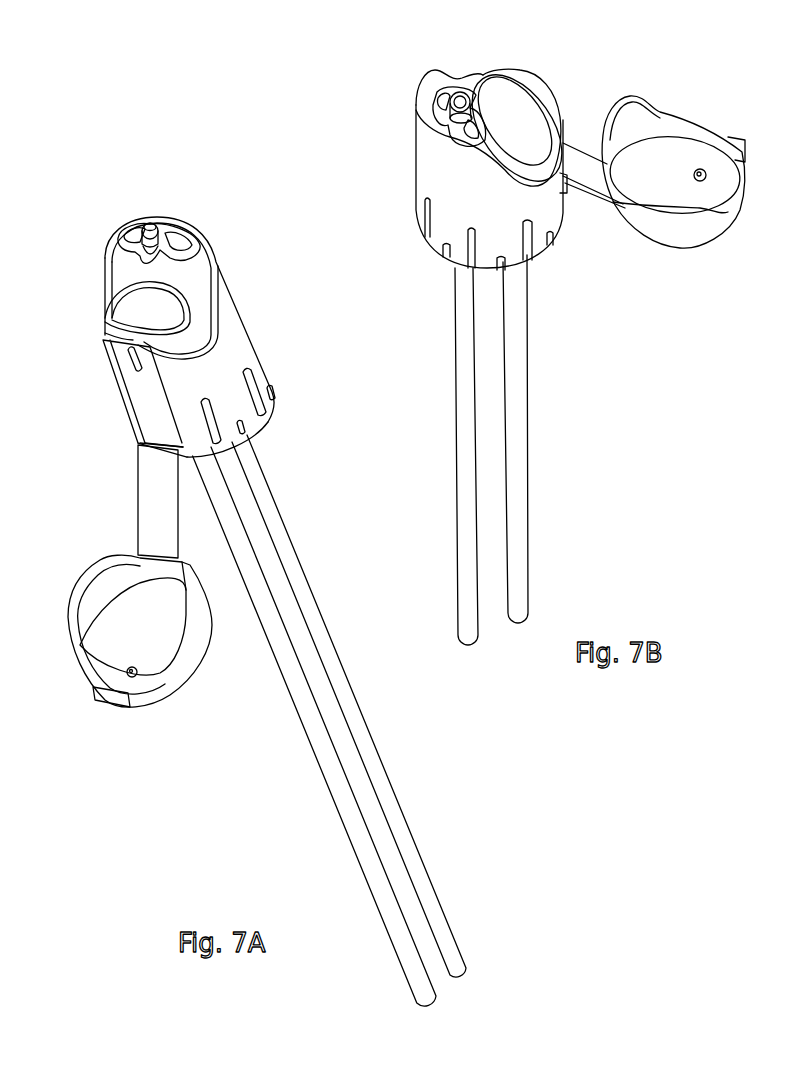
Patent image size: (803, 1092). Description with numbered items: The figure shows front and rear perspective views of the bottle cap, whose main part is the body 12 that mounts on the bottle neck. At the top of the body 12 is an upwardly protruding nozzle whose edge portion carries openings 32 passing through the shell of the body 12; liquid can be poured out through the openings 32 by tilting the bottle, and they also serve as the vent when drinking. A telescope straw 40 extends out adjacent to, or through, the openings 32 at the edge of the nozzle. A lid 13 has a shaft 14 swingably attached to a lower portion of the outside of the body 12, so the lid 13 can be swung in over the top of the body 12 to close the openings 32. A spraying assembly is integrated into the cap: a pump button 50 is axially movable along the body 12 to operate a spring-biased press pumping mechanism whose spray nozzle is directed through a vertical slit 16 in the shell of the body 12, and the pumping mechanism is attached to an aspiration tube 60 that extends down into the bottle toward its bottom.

In FIG. 7A, the body 12 is at (240, 343).
In FIG. 7B, the body 12 is at (491, 169).
In FIG. 7A, the lid 13 is at (200, 645).
In FIG. 7B, the lid 13 is at (673, 172).
In FIG. 7A, the shaft 14 is at (150, 503).
In FIG. 7B, the shaft 14 is at (594, 175).
In FIG. 7A, the vertical slit 16 is at (130, 358).
In FIG. 7A, the opening 32 is at (190, 252).
In FIG. 7B, the opening 32 is at (433, 93).
In FIG. 7A, the telescope straw 40 is at (177, 226).
In FIG. 7B, the telescope straw 40 is at (480, 93).
In FIG. 7A, the pump button 50 is at (133, 307).
In FIG. 7B, the pump button 50 is at (533, 122).
In FIG. 7A, the aspiration tube 60 is at (345, 832).
In FIG. 7B, the aspiration tube 60 is at (528, 455).